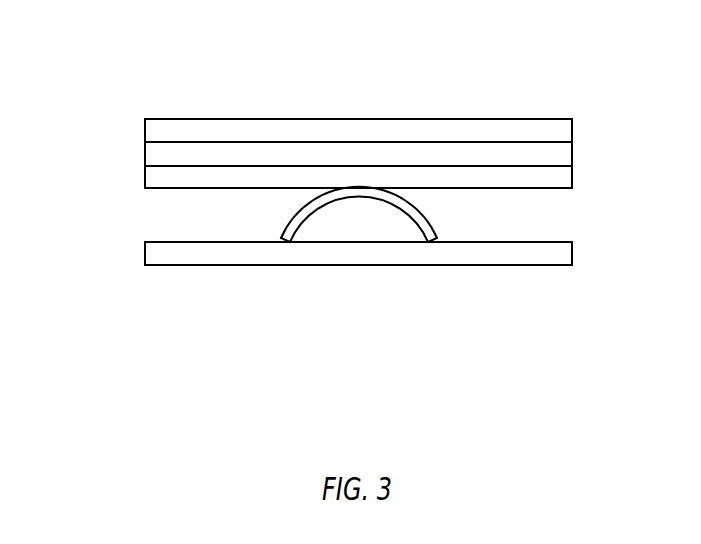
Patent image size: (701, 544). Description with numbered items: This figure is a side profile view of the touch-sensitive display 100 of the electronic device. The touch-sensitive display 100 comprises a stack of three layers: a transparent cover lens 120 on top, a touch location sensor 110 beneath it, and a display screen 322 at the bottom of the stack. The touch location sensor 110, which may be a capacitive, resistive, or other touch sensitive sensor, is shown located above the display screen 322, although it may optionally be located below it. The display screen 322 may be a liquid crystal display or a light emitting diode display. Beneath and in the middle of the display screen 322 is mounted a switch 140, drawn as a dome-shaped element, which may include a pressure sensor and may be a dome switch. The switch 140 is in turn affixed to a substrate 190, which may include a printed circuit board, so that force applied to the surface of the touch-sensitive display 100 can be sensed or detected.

The touch-sensitive display 100 is at (618, 52).
The transparent cover lens 120 is at (572, 127).
The touch location sensor 110 is at (572, 152).
The display screen 322 is at (572, 178).
The switch 140 is at (297, 210).
The substrate 190 is at (145, 253).